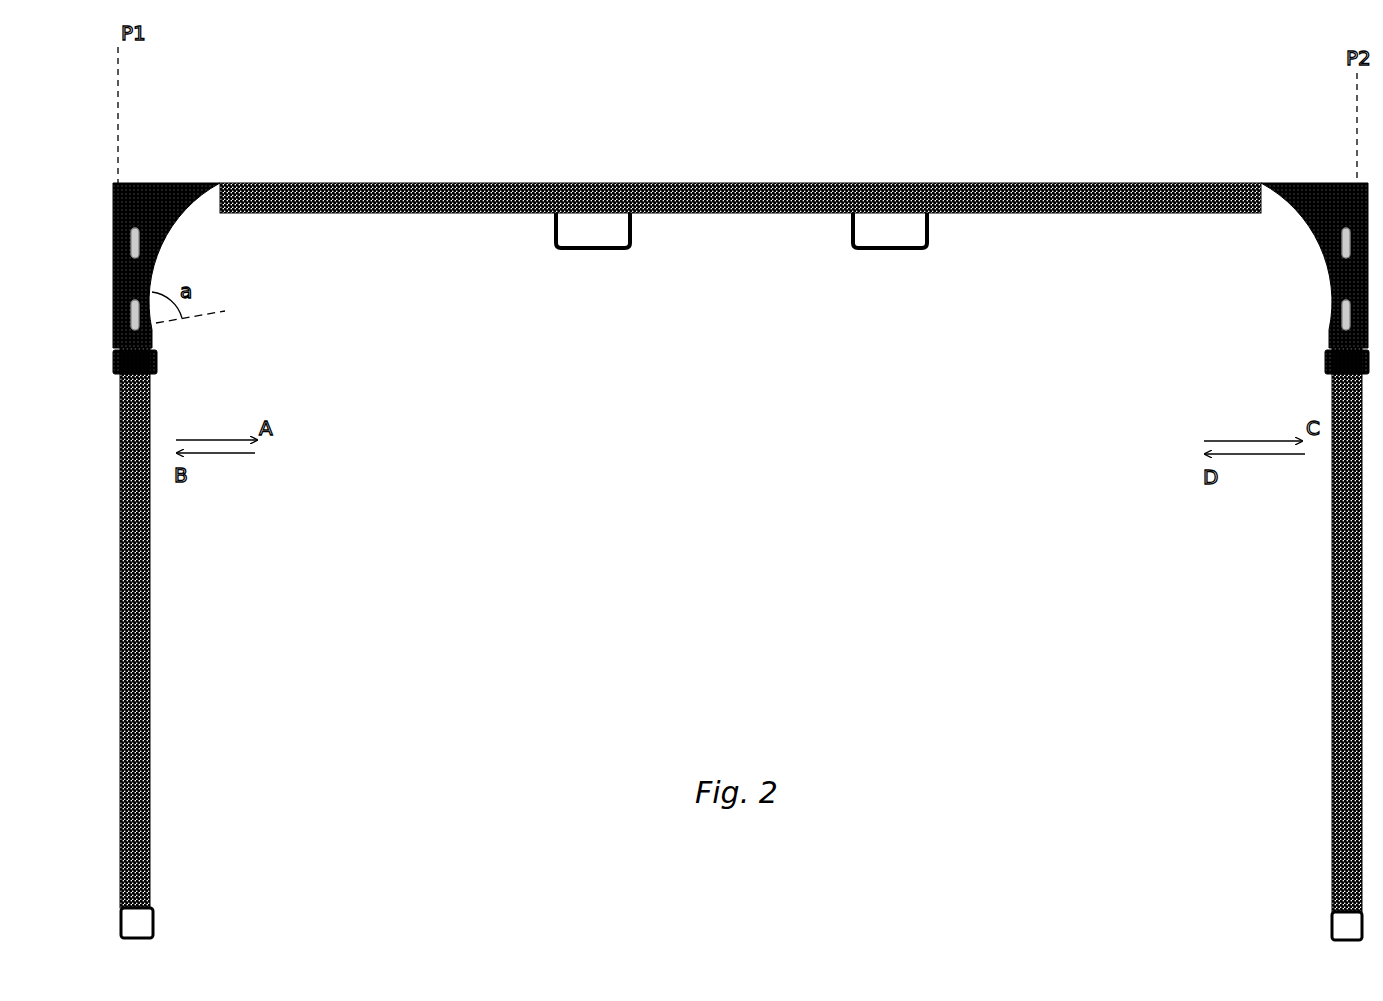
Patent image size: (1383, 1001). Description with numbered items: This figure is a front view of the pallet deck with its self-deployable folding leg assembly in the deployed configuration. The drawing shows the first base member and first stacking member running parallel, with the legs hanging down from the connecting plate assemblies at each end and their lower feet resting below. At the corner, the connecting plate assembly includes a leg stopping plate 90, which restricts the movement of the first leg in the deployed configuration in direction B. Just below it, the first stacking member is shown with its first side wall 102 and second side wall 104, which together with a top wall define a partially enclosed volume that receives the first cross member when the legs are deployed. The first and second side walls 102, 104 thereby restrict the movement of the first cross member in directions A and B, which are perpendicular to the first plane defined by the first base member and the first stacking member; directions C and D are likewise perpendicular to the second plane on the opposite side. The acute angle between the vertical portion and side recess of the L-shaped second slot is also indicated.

The leg stopping plate 90 is at (113, 277).
The first side wall 102 is at (113, 362).
The second side wall 104 is at (157, 361).